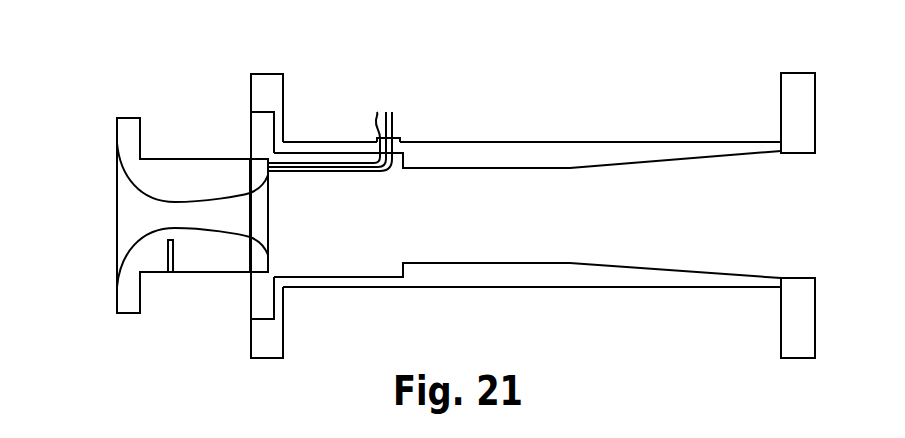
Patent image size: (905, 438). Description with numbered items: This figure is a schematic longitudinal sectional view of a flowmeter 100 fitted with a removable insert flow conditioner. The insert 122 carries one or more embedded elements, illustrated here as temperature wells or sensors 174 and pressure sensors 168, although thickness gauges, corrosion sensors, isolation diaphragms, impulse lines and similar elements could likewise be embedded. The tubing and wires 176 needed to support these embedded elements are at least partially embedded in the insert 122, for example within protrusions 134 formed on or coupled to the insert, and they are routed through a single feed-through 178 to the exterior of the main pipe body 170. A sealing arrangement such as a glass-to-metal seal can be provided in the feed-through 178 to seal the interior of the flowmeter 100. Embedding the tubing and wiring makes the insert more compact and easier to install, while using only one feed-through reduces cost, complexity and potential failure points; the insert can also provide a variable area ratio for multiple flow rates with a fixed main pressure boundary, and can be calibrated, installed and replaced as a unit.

The flowmeter 100 is at (626, 124).
The insert 122 is at (156, 98).
The protrusions 134 is at (148, 184).
The pressure sensors 168 is at (180, 168).
The main pipe body 170 is at (540, 233).
The temperature wells or sensors 174 is at (172, 284).
The tubing and wires 176 is at (345, 198).
The feed-through 178 is at (393, 138).